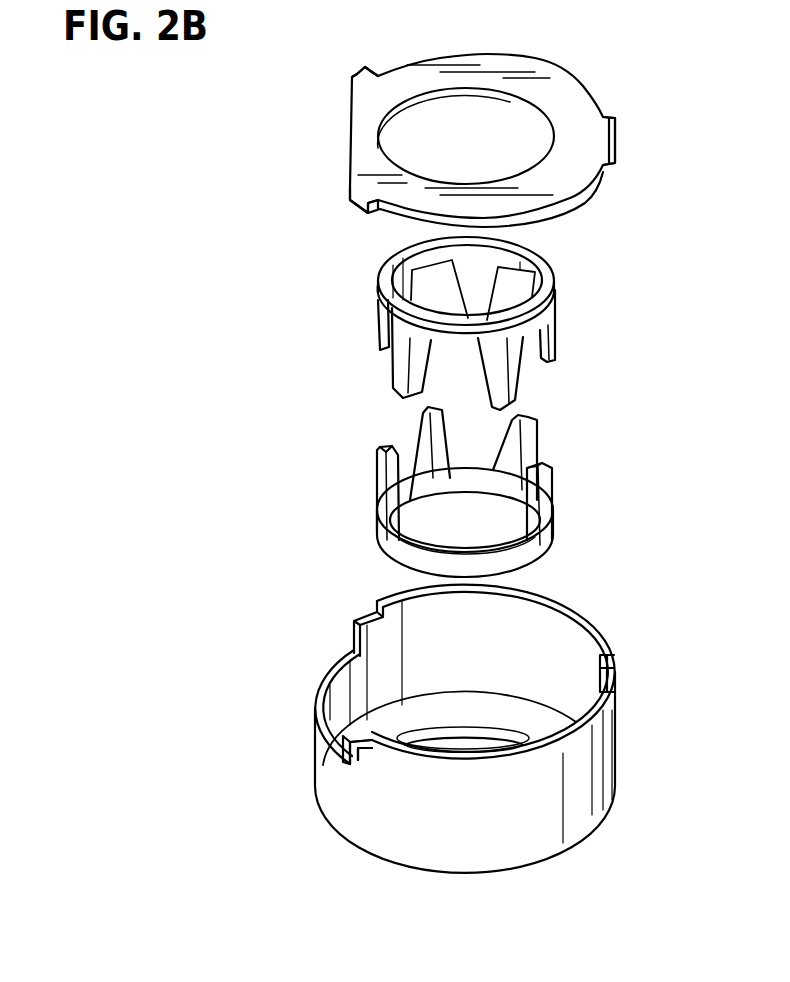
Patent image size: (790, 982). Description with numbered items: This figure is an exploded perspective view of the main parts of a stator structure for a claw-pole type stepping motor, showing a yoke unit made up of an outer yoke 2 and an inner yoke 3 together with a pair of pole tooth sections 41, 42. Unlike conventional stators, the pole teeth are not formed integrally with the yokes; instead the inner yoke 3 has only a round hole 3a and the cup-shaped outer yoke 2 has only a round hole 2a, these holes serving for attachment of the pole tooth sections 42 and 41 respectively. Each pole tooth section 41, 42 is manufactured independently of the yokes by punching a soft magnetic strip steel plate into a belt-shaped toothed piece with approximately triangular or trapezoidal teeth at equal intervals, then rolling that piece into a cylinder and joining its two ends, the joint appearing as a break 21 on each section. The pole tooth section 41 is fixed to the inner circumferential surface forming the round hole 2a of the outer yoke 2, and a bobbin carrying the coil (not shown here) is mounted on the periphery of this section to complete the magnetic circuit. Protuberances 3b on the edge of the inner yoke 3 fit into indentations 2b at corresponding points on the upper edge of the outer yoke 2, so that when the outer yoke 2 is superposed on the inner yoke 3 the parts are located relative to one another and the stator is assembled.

The outer yoke 2 is at (638, 636).
The round hole 2a is at (455, 745).
The indentations 2b is at (372, 610).
The inner yoke 3 is at (612, 98).
The round hole 3a is at (535, 162).
The protuberances 3b is at (352, 77).
The break (joint) 21 is at (382, 326).
The pole tooth section 41 is at (562, 436).
The pole tooth section 42 is at (574, 283).